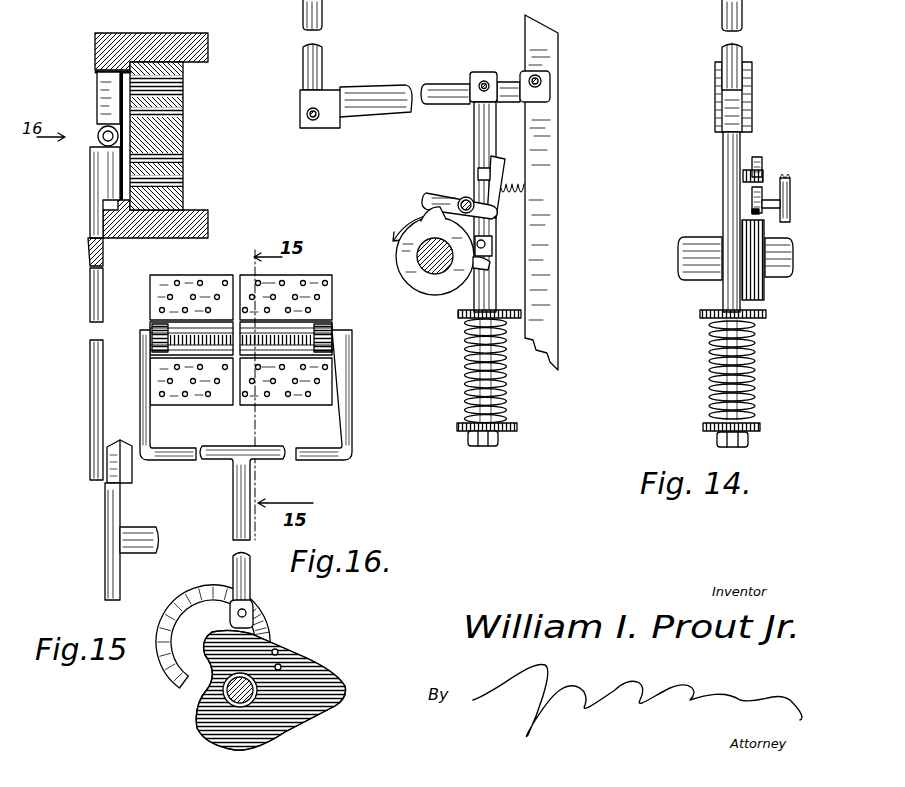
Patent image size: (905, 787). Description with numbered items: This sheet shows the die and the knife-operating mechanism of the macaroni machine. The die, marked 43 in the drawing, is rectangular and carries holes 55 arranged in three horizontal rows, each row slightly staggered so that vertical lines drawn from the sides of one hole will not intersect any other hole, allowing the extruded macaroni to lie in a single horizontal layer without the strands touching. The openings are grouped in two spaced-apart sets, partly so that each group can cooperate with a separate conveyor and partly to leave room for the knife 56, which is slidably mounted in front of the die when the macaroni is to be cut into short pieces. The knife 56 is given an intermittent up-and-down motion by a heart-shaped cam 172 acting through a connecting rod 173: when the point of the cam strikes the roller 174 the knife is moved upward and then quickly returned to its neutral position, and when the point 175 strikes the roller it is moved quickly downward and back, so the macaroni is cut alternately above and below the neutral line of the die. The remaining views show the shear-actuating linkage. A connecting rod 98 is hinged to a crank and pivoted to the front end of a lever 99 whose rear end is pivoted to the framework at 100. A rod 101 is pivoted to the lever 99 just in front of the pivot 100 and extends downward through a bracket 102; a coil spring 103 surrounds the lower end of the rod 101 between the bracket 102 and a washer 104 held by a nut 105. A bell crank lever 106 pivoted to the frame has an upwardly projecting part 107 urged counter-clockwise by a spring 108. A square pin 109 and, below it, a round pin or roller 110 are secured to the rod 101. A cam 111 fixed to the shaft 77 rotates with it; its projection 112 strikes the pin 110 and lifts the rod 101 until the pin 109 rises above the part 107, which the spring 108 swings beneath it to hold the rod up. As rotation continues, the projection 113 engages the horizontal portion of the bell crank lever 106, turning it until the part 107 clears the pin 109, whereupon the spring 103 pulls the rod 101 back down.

In FIG. 16, the hinge leaf 43 is at (228, 263).
In FIG. 16, the holes 55 is at (330, 285).
In FIG. 15, the knife 56 is at (119, 126).
In FIG. 16, the knife 56 is at (298, 330).
In FIG. 16, the shaft 77 is at (428, 250).
In FIG. 14, the shaft 77 is at (683, 249).
In FIG. 16, the connecting rod 98 is at (303, 72).
In FIG. 14, the connecting rod 98 is at (722, 3).
In FIG. 16, the lever 99 is at (390, 84).
In FIG. 16, the pivot 100 is at (552, 84).
In FIG. 16, the rod 101 is at (474, 145).
In FIG. 14, the rod 101 is at (727, 160).
In FIG. 16, the bracket 102 is at (460, 318).
In FIG. 14, the bracket 102 is at (700, 314).
In FIG. 16, the coil spring 103 is at (507, 389).
In FIG. 14, the coil spring 103 is at (708, 378).
In FIG. 16, the washer 104 is at (510, 425).
In FIG. 14, the washer 104 is at (703, 427).
In FIG. 16, the nut 105 is at (500, 440).
In FIG. 14, the nut 105 is at (718, 438).
In FIG. 16, the bell crank lever 106 is at (452, 196).
In FIG. 14, the bell crank lever 106 is at (752, 200).
In FIG. 16, the upwardly projecting part 107 is at (500, 157).
In FIG. 14, the upwardly projecting part 107 is at (762, 158).
In FIG. 16, the spring 108 is at (503, 188).
In FIG. 16, the pin 109 is at (479, 172).
In FIG. 14, the pin 109 is at (764, 177).
In FIG. 16, the roller 110 is at (487, 244).
In FIG. 14, the roller 110 is at (760, 226).
In FIG. 16, the cam 111 is at (416, 274).
In FIG. 14, the cam 111 is at (765, 290).
In FIG. 16, the projection 112 is at (478, 265).
In FIG. 16, the projection 113 is at (425, 209).
In FIG. 14, the projection 113 is at (750, 213).
In FIG. 15, the cam 172 is at (105, 535).
In FIG. 16, the cam 172 is at (307, 676).
In FIG. 15, the connecting rod 173 is at (90, 300).
In FIG. 16, the connecting rod 173 is at (233, 498).
In FIG. 15, the roller 174 is at (132, 479).
In FIG. 16, the roller 174 is at (255, 612).
In FIG. 16, the point 175 is at (178, 683).